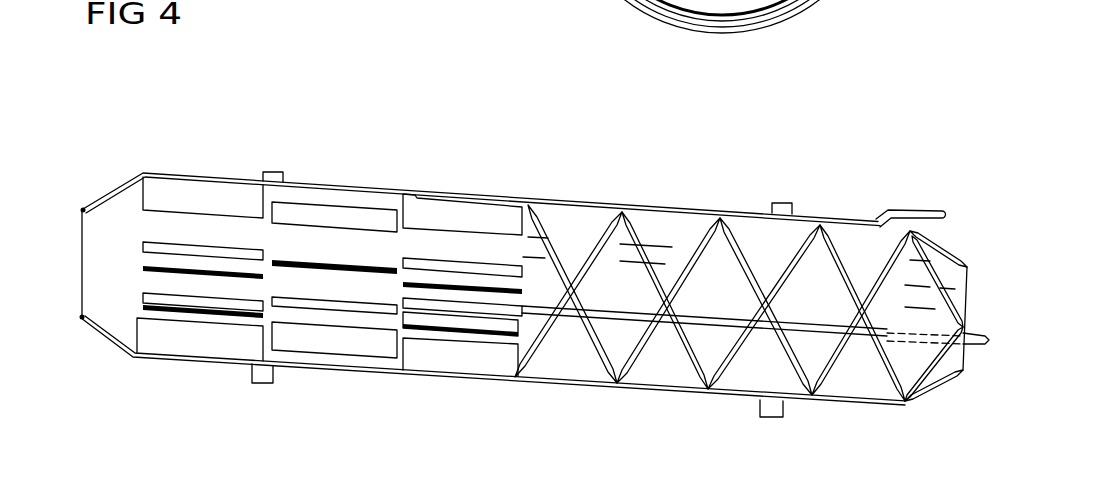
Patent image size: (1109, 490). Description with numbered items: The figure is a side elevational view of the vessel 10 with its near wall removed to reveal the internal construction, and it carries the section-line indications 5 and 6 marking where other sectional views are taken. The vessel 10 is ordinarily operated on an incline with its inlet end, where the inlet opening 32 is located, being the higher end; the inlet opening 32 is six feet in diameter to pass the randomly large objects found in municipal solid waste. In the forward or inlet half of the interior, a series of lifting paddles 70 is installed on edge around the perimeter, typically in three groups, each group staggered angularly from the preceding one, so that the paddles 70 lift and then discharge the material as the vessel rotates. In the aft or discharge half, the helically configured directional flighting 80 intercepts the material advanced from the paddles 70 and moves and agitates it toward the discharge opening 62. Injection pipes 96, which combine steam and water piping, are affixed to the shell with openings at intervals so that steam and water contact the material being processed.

The vessel 10 is at (800, 15).
The inlet opening 32 is at (88, 242).
The lifting paddles 70 is at (337, 220).
The directional flighting 80 is at (602, 357).
The injection pipes 96 is at (929, 212).
The discharge opening 62 is at (963, 352).
The section line 5- 5 is at (232, 378).
The section line 6- 6 is at (843, 418).